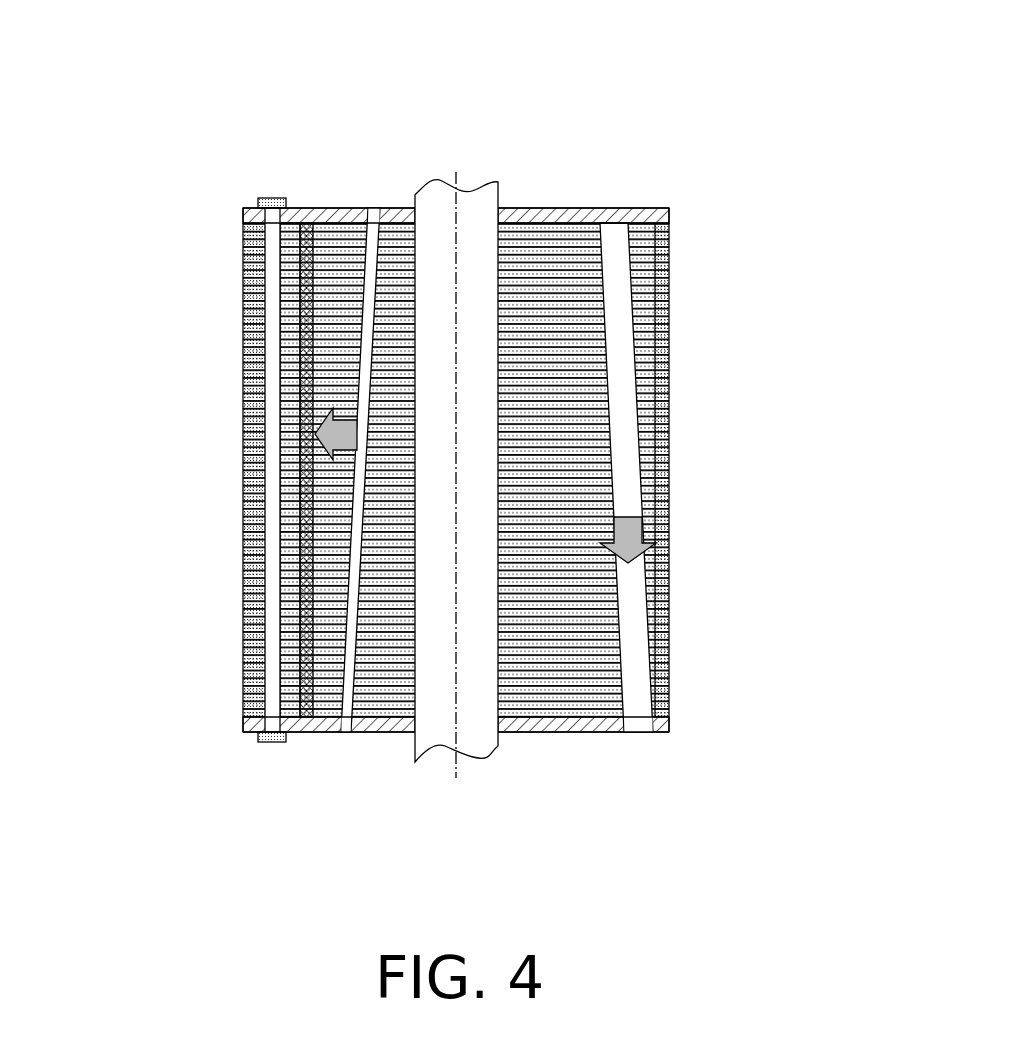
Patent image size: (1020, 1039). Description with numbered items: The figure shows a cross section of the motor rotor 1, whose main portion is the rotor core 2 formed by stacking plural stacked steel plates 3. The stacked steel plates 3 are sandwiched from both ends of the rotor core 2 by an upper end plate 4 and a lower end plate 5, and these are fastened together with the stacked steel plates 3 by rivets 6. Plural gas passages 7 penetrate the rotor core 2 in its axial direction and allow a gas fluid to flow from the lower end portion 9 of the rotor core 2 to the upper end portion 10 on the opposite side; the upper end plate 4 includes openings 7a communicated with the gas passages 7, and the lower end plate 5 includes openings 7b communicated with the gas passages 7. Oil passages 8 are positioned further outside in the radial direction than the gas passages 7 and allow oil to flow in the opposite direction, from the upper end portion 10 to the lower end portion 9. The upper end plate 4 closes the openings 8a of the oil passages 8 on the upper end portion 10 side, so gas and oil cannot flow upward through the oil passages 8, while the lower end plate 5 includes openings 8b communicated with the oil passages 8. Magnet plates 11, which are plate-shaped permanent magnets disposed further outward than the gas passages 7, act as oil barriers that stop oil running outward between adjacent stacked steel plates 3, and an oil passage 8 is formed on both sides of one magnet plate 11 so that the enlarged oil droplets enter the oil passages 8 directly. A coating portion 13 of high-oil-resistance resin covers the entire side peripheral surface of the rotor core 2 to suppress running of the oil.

The motor rotor 1 is at (714, 188).
The rotor core 2 is at (243, 477).
The stacked steel plates 3 is at (292, 432).
The upper end plate 4 is at (560, 208).
The lower end plate 5 is at (543, 722).
The rivets 6 is at (270, 365).
The gas passages 7 is at (300, 472).
The openings 7a is at (378, 212).
The openings 7b is at (347, 730).
The oil passages 8 is at (710, 477).
The openings 8a is at (617, 225).
The openings 8b is at (637, 722).
The lower end portion 9 is at (322, 730).
The upper end portion 10 is at (337, 210).
The magnet plates 11 is at (302, 325).
The coating portion 13 is at (662, 603).